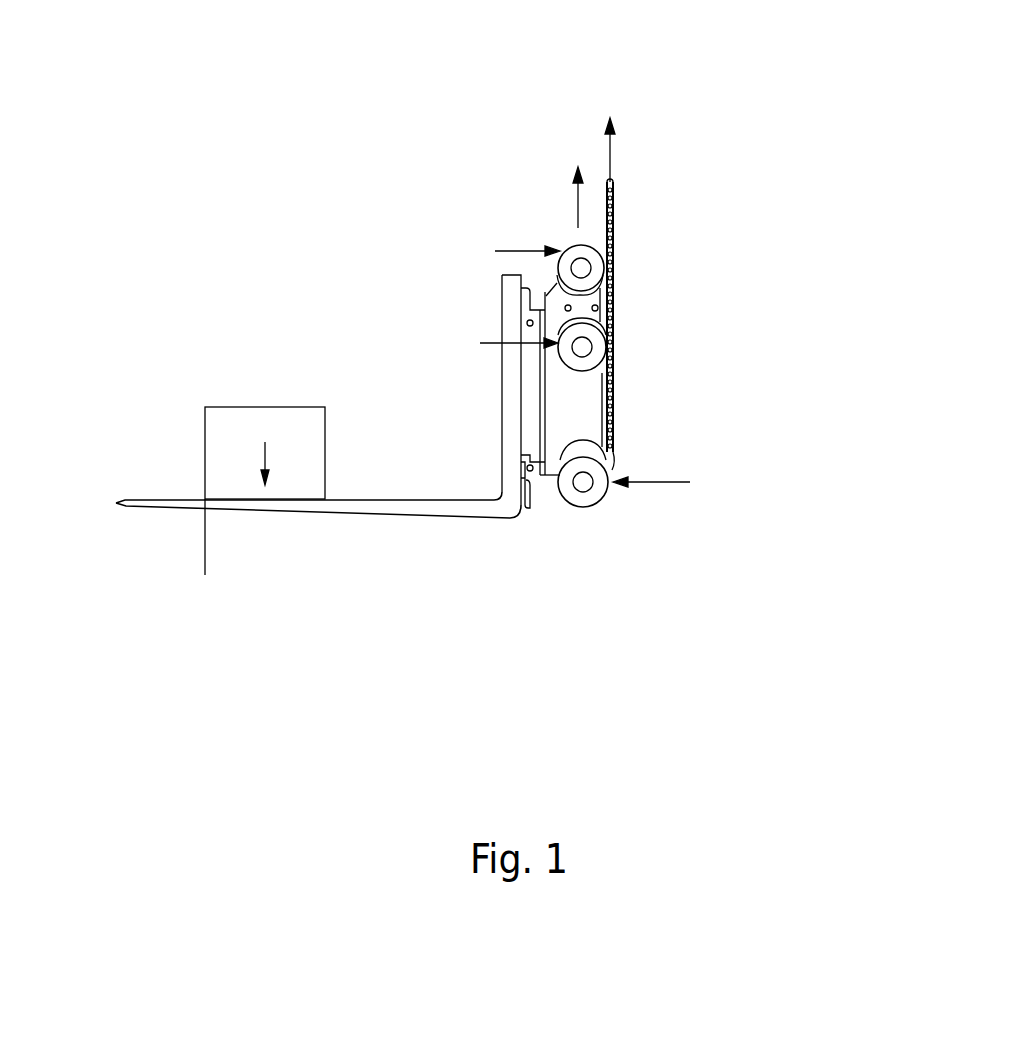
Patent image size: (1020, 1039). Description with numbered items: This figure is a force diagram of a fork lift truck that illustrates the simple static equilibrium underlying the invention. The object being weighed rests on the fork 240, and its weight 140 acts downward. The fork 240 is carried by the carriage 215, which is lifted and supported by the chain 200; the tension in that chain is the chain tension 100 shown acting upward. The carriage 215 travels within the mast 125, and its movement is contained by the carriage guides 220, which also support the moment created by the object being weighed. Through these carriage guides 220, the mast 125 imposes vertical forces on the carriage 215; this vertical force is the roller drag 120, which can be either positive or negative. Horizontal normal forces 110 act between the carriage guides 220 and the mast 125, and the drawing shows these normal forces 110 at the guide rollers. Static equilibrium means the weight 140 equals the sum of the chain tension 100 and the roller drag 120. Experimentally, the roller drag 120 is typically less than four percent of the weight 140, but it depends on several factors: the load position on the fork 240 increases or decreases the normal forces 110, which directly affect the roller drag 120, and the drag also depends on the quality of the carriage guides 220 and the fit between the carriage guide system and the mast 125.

The chain tension 100 is at (609, 120).
The normal force 110 is at (720, 473).
The roller drag 120 is at (578, 212).
The mast 125 is at (502, 294).
The weight 140 is at (205, 448).
The chain 200 is at (616, 305).
The carriage 215 is at (512, 517).
The carriage guides 220 is at (530, 518).
The fork 240 is at (205, 575).